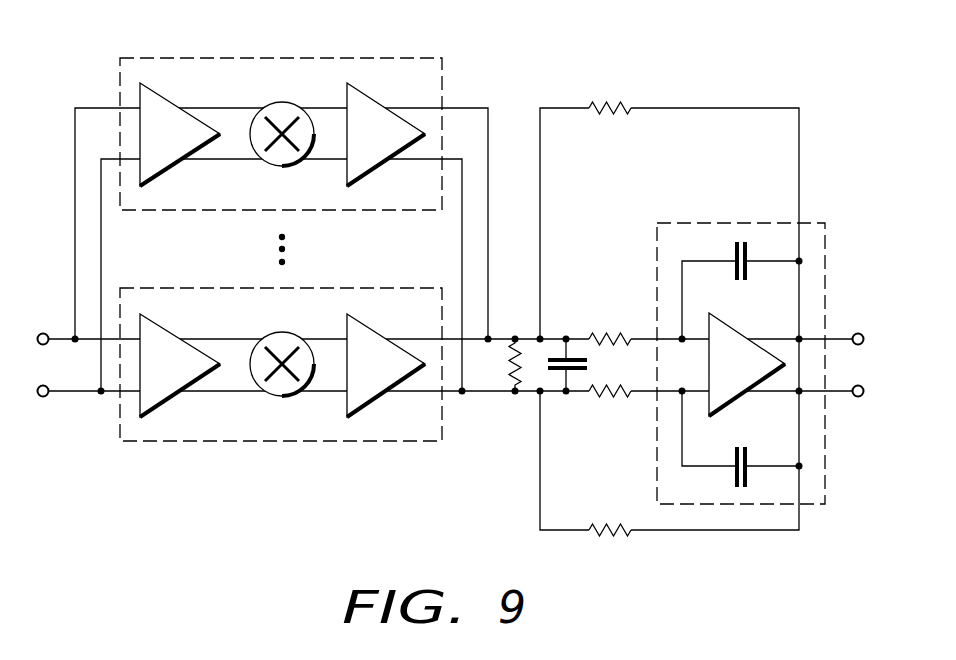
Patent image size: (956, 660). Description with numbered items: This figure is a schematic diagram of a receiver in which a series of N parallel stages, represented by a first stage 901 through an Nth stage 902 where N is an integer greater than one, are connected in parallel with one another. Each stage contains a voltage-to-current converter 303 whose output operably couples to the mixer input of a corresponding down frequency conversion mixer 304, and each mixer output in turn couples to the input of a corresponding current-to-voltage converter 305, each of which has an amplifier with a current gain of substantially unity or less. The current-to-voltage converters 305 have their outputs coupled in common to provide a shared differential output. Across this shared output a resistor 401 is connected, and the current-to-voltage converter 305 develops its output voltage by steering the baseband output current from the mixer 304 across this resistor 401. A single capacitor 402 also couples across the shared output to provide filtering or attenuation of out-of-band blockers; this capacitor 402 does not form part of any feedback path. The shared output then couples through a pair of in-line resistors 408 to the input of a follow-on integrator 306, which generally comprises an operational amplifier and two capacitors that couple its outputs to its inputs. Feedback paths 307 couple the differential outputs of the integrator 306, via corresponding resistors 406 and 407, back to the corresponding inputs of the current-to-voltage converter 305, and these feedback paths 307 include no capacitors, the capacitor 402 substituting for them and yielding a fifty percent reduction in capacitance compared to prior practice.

The first stage 901 is at (172, 442).
The Nth stage 902 is at (143, 58).
The voltage-to-current converter 303 is at (156, 94).
The down frequency conversion mixer 304 is at (282, 102).
The current-to-voltage converter 305 is at (362, 92).
The integrator 306 is at (700, 222).
The feedback path 307 is at (690, 106).
The resistor 401 is at (508, 369).
The capacitor 402 is at (577, 372).
The resistor 406 is at (598, 103).
The resistor 407 is at (612, 535).
The in-line resistor 408 is at (605, 332).